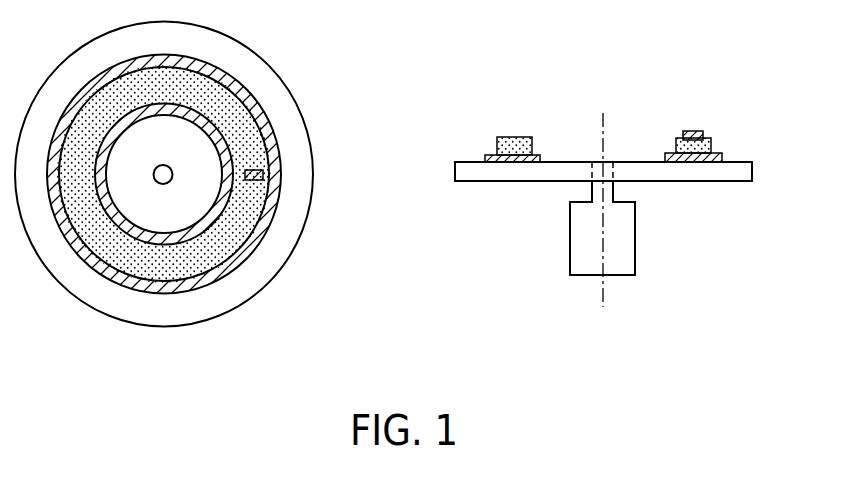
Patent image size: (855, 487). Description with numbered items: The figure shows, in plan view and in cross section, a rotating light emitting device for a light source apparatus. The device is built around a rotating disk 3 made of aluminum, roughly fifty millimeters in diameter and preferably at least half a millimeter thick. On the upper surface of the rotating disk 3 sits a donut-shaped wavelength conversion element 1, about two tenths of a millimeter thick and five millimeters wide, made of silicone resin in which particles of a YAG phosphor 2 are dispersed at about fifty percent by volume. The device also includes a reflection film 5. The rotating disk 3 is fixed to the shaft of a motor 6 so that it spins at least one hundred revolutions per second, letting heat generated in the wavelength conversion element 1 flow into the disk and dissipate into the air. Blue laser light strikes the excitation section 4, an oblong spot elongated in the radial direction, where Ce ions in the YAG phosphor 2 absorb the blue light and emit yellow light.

The wavelength conversion element 1 is at (240, 89).
The YAG phosphor 2 is at (247, 120).
The rotating disk 3 is at (295, 148).
The excitation section 4 is at (265, 178).
The reflection film 5 is at (263, 230).
The motor 6 is at (627, 238).